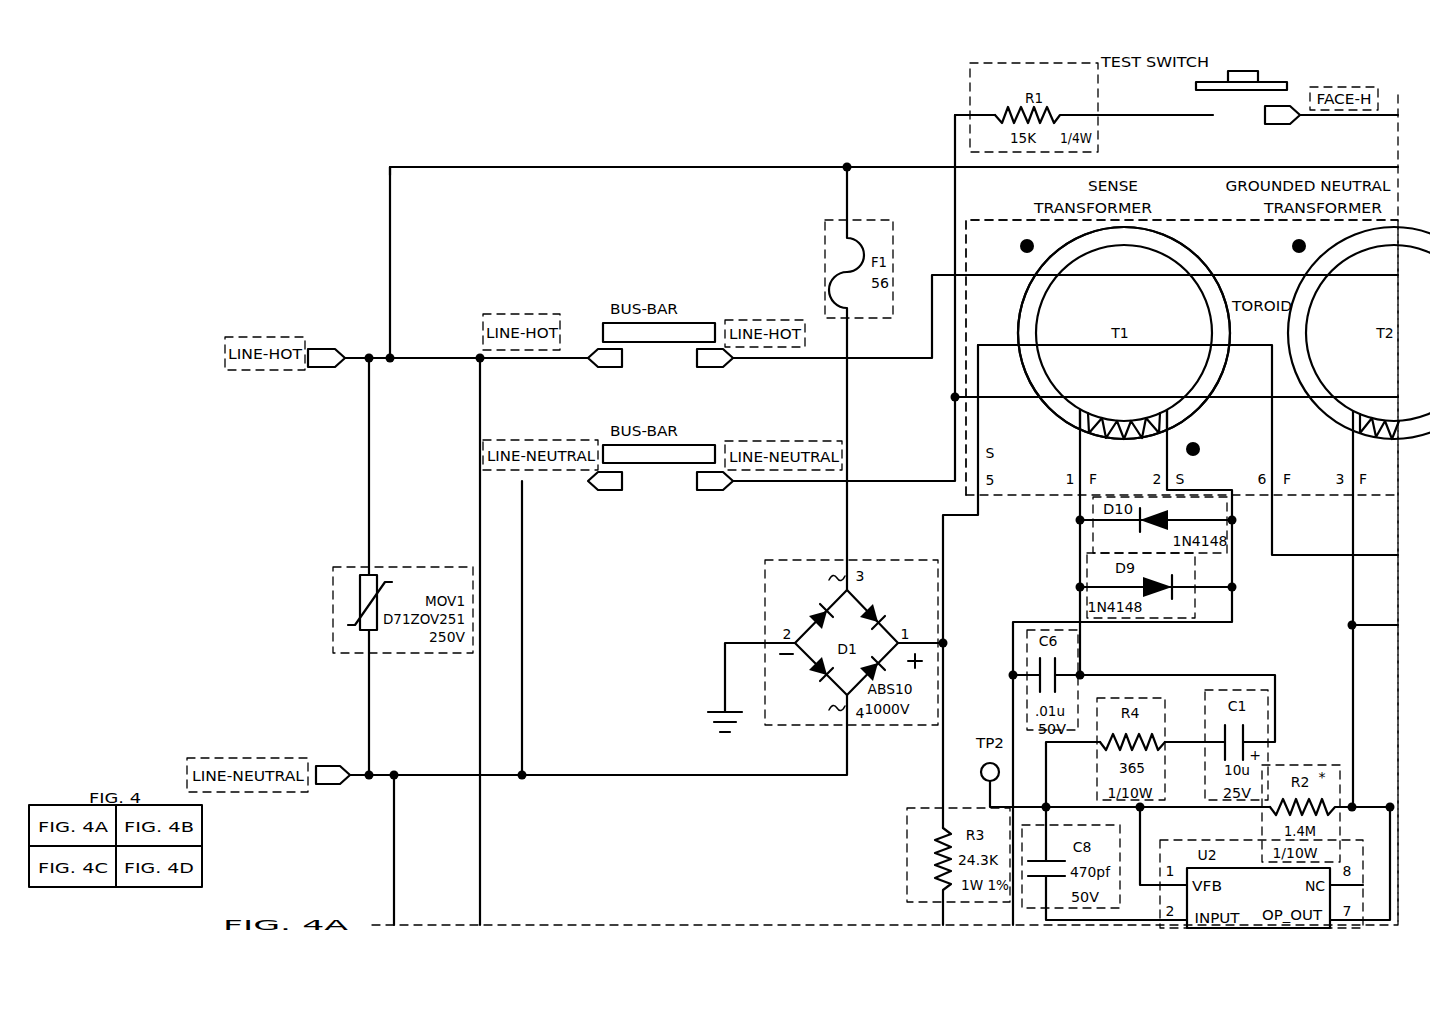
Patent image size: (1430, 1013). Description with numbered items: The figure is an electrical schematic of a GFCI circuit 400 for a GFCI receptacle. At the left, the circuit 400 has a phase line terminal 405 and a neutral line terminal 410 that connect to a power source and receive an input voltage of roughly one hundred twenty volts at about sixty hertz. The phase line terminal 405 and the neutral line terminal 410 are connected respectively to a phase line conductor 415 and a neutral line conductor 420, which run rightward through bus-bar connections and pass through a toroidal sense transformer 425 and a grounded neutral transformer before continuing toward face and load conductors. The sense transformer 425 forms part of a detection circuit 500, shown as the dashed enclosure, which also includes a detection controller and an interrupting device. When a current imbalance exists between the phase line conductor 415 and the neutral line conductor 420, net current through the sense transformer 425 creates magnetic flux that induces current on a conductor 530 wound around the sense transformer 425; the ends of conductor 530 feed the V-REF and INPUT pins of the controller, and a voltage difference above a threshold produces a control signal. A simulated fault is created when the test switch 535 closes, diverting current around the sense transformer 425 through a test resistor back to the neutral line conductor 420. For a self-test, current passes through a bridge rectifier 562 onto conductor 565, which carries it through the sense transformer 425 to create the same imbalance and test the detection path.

The GFCI circuit 400 is at (236, 132).
The phase line terminal 405 is at (325, 345).
The neutral line terminal 410 is at (338, 766).
The phase line conductor 415 is at (825, 355).
The neutral line conductor 420 is at (750, 484).
The sense transformer 425 is at (1045, 248).
The detection circuit 500 is at (884, 118).
The conductor 530 is at (1163, 437).
The test switch 535 is at (1270, 82).
The rectifier 562 is at (830, 688).
The conductor 565 is at (943, 535).